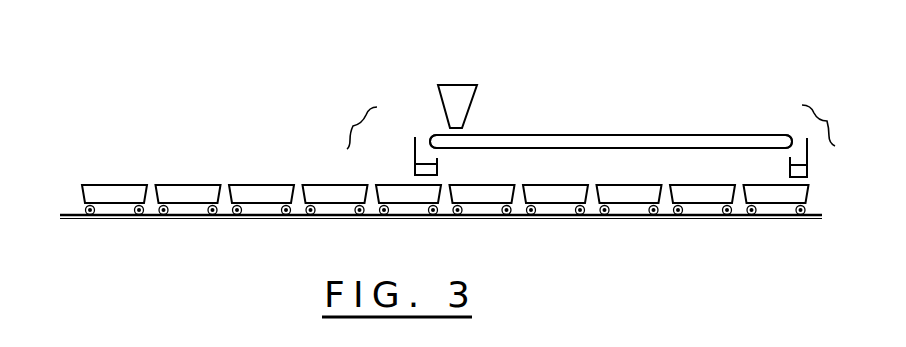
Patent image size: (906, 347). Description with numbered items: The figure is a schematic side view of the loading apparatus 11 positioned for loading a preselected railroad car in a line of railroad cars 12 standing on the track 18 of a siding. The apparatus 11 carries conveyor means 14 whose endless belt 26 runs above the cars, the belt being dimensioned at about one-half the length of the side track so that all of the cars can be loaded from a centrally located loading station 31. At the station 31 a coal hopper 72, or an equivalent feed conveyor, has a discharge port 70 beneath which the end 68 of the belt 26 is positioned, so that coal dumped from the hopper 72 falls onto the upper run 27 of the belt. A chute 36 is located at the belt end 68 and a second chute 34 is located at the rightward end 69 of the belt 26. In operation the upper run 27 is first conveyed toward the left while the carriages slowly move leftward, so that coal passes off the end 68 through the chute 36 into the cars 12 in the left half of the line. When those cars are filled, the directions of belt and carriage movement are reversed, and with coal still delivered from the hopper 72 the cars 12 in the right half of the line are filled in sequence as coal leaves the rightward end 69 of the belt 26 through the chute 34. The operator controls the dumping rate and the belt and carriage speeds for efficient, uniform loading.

The loading apparatus 11 is at (741, 84).
The railroad cars 12 is at (192, 186).
The conveyor means 14 is at (630, 101).
The track 18 is at (196, 219).
The endless belt 26 is at (672, 135).
The upper run of the belt 27 is at (576, 135).
The loading station 31 is at (419, 66).
The chute 34 is at (810, 163).
The chute 36 is at (415, 151).
The end of the belt 68 is at (433, 133).
The rightward end of the belt 69 is at (800, 133).
The discharge port 70 is at (456, 128).
The coal hopper 72 is at (473, 98).